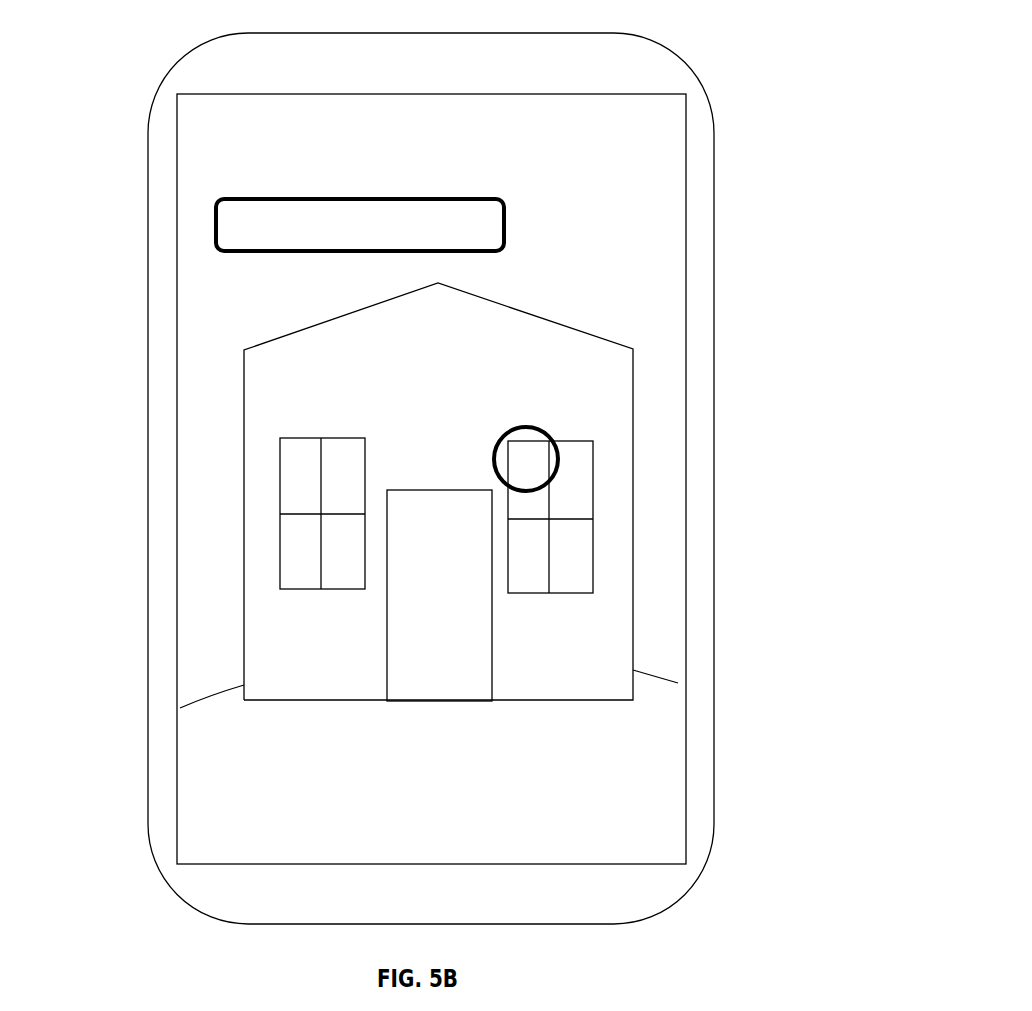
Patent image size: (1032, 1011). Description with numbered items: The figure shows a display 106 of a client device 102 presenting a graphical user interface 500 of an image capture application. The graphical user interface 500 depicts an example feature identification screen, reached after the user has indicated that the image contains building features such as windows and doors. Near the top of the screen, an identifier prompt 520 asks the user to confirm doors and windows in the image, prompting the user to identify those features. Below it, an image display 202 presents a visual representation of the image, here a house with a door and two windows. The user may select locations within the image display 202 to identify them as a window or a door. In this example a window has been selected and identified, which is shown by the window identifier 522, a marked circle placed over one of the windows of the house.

The client device 102 is at (431, 468).
The display 106 is at (431, 468).
The graphical user interface 500 is at (177, 170).
The identifier prompt 520 is at (360, 213).
The image display 202 is at (557, 542).
The window identifier 522 is at (550, 428).